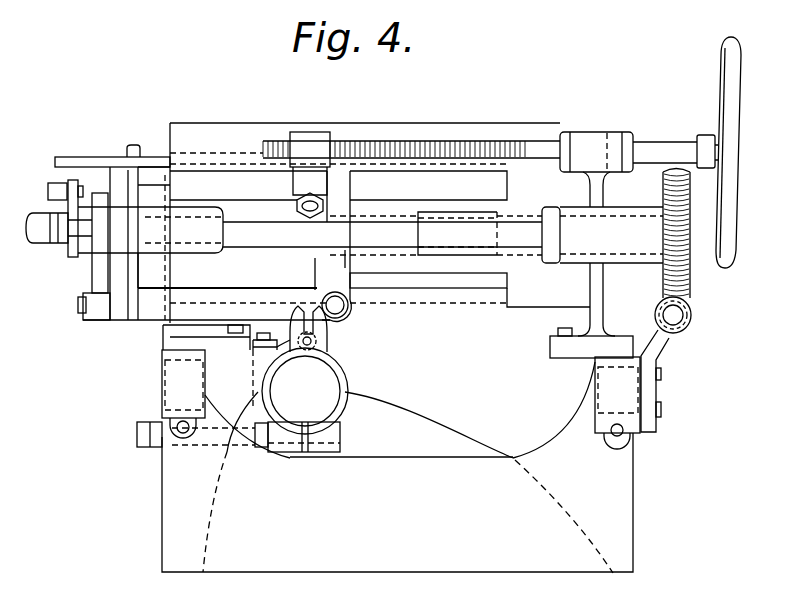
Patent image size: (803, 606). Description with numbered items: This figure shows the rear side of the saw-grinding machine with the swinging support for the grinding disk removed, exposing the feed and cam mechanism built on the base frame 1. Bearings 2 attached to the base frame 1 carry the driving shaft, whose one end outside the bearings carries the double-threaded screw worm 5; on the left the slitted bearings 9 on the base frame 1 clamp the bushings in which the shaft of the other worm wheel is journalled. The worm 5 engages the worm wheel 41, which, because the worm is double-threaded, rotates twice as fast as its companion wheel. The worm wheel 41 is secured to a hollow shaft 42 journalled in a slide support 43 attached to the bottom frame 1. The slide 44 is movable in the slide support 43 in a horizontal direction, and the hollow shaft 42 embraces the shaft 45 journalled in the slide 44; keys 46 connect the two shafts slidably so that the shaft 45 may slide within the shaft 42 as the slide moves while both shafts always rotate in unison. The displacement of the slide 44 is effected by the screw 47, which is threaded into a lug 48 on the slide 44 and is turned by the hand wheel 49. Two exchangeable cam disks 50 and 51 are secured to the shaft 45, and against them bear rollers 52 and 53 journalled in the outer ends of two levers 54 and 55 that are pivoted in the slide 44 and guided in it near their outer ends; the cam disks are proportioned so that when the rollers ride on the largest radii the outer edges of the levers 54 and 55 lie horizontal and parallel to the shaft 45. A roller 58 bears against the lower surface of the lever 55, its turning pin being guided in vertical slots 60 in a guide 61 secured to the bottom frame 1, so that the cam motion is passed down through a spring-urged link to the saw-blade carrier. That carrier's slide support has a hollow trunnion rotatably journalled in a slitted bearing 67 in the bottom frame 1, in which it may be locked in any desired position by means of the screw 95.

The base frame 1 is at (620, 512).
The bearings 2 is at (658, 345).
The screw worm 5 is at (690, 318).
The slitted bearings 9 is at (165, 380).
The worm wheel 41 is at (680, 265).
The shaft 42 is at (540, 252).
The slide support 43 is at (603, 288).
The slide 44 is at (350, 190).
The shaft 45 is at (254, 236).
The keys 46 is at (448, 218).
The screw 47 is at (452, 141).
The lug 48 is at (315, 132).
The hand wheel 49 is at (726, 62).
The cam disk 50 is at (68, 207).
The cam disk 51 is at (95, 268).
The roller 52 is at (68, 183).
The roller 53 is at (95, 318).
The lever 54 is at (84, 157).
The lever 55 is at (158, 313).
The roller 58 is at (328, 328).
The vertical slots 60 is at (348, 305).
The guide 61 is at (330, 346).
The slitted bearing 67 is at (297, 415).
The screw 95 is at (142, 440).